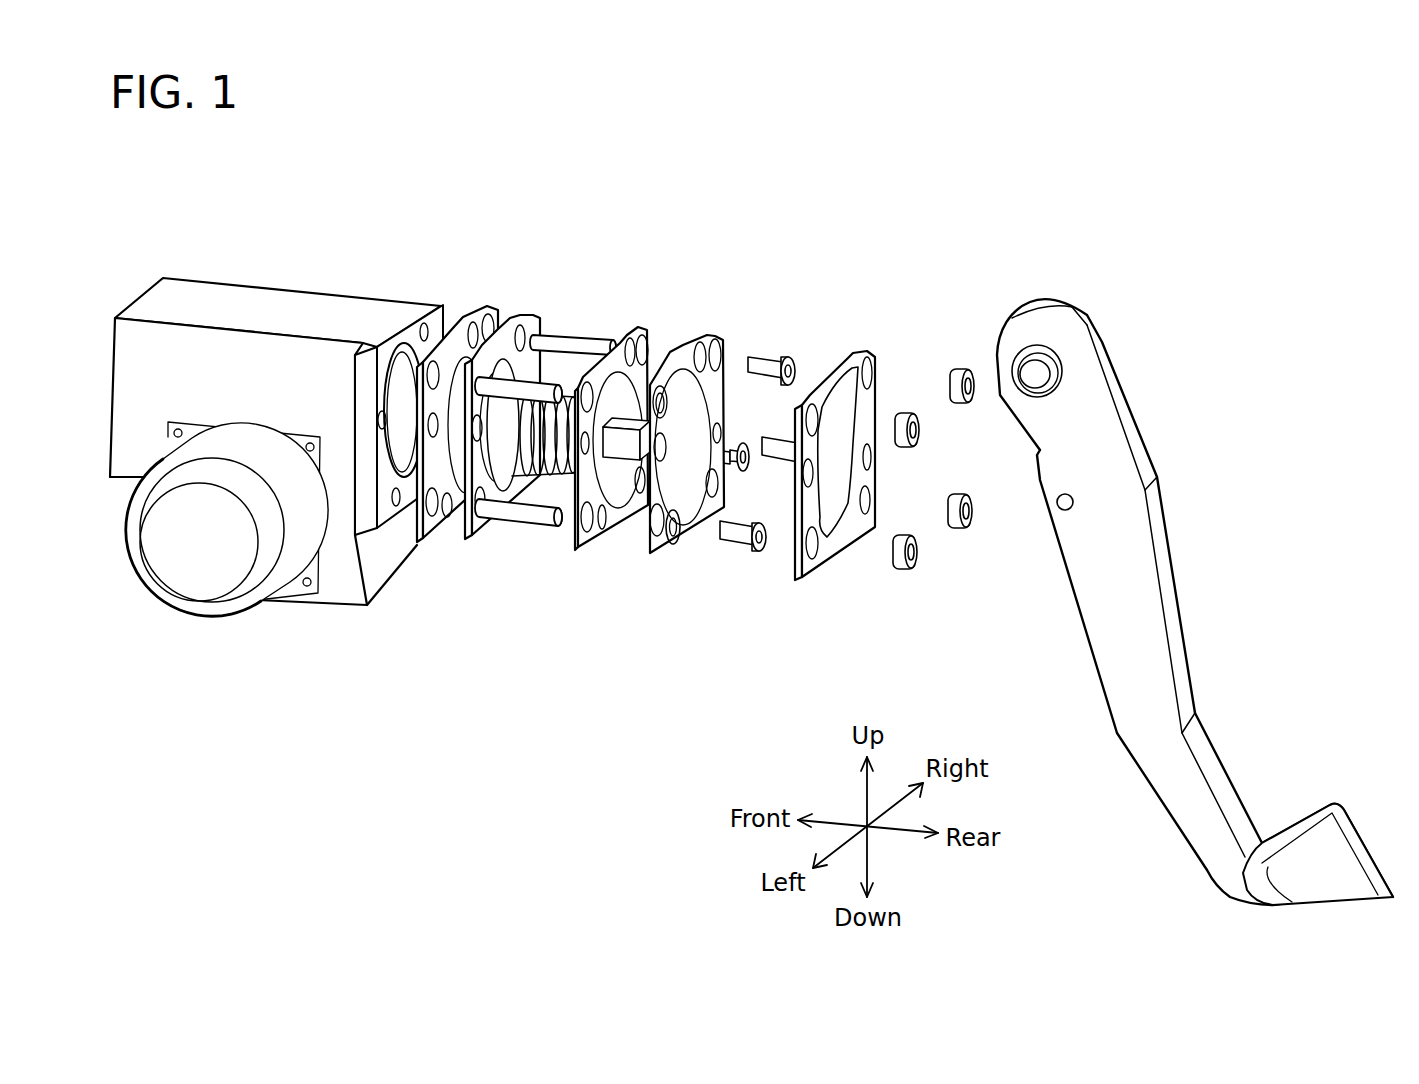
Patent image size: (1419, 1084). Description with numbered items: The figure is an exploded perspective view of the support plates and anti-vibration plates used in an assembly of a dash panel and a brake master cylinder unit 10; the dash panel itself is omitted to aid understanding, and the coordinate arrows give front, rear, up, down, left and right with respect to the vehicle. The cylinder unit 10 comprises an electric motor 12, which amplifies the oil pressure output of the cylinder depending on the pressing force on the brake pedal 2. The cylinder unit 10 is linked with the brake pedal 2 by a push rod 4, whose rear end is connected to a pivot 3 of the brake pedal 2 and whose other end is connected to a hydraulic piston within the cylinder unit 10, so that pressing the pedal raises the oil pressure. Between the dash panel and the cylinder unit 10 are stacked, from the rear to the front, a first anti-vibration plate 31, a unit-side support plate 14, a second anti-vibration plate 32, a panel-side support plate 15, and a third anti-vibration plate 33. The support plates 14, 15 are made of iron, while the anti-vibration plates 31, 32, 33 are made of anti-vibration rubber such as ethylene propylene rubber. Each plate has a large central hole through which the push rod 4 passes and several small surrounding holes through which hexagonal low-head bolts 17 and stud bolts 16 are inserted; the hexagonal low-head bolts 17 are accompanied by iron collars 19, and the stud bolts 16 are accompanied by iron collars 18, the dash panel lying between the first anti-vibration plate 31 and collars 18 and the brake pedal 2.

The brake pedal 2 is at (1150, 590).
The pivot 3 is at (1060, 506).
The push rod 4 is at (650, 345).
The cylinder unit 10 is at (348, 218).
The electric motor 12 is at (193, 582).
The unit-side support plate 14 is at (703, 520).
The panel-side support plate 15 is at (490, 533).
The stud bolts 16 is at (547, 362).
The hexagonal low-head bolts 17 is at (778, 438).
The iron collars 18 is at (962, 368).
The iron collars 19 is at (668, 425).
The first anti-vibration plate 31 is at (867, 533).
The second anti-vibration plate 32 is at (617, 540).
The third anti-vibration plate 33 is at (433, 537).